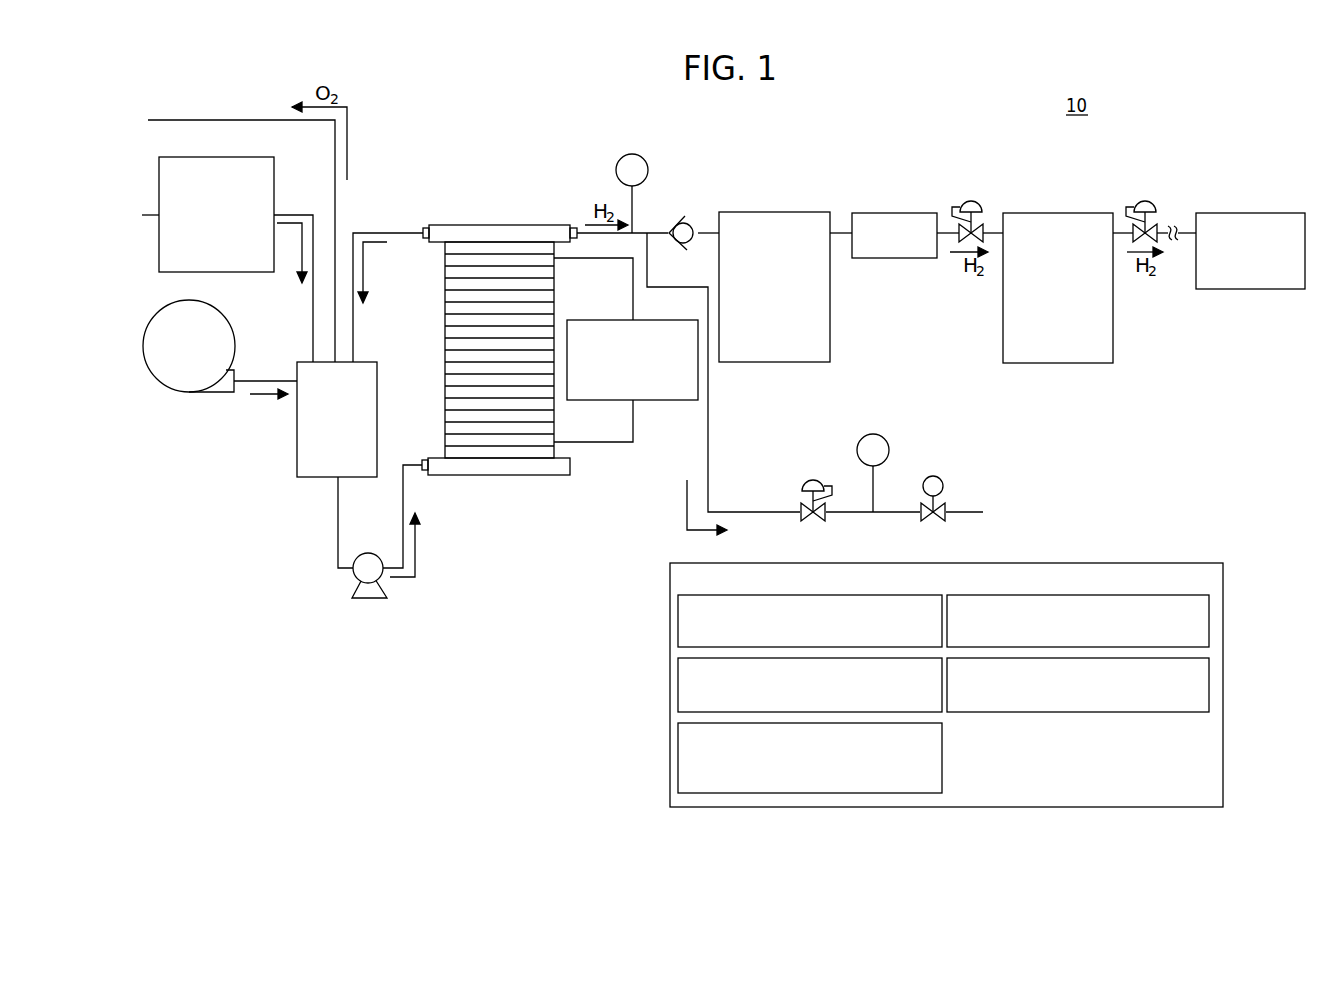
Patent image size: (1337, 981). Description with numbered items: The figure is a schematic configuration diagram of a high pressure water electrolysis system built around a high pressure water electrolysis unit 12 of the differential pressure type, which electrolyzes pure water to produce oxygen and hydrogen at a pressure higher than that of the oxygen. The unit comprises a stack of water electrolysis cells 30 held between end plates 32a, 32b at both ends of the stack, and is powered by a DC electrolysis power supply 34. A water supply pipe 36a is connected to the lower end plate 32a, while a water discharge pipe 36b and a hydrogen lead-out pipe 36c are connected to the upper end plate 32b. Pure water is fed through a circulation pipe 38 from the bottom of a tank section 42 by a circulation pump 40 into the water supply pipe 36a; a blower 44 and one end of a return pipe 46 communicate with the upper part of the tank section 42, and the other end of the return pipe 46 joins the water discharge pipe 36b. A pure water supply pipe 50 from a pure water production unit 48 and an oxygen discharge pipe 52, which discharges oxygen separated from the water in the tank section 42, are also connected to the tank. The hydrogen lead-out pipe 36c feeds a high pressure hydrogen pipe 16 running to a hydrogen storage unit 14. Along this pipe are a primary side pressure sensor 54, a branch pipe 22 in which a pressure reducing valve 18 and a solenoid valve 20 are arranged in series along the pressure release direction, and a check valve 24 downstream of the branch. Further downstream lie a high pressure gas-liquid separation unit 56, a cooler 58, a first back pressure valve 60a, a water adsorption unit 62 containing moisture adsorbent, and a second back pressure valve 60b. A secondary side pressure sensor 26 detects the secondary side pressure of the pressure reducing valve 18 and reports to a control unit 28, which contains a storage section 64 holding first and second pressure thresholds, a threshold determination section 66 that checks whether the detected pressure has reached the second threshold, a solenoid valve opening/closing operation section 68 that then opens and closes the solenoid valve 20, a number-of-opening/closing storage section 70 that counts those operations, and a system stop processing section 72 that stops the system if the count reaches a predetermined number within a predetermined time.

The high pressure water electrolysis unit 12 is at (463, 168).
The hydrogen storage unit 14 is at (1273, 213).
The high pressure hydrogen pipe 16 is at (845, 232).
The pressure reducing valve 18 is at (820, 480).
The solenoid valve 20 is at (936, 476).
The branch pipe 22 is at (710, 410).
The check valve 24 is at (685, 217).
The secondary side pressure sensor 26 is at (882, 434).
The control unit 28 is at (1175, 563).
The stack of water electrolysis cells 30 is at (447, 316).
The end plate 32a is at (500, 478).
The end plate 32b is at (495, 225).
The electrolysis power supply 34 is at (594, 320).
The water supply pipe 36a is at (422, 459).
The water discharge pipe 36b is at (425, 227).
The hydrogen lead-out pipe 36c is at (573, 227).
The circulation pipe 38 is at (403, 520).
The circulation pump 40 is at (370, 600).
The tank section 42 is at (297, 468).
The blower 44 is at (188, 393).
The return pipe 46 is at (378, 233).
The pure water production unit 48 is at (238, 157).
The pure water supply pipe 50 is at (305, 215).
The oxygen discharge pipe 52 is at (148, 121).
The primary side pressure sensor 54 is at (632, 154).
The high pressure gas-liquid separation unit 56 is at (768, 212).
The cooler 58 is at (900, 212).
The first back pressure valve 60a is at (972, 201).
The second back pressure valve 60b is at (1147, 201).
The water adsorption unit 62 is at (1055, 213).
The storage section 64 is at (677, 622).
The threshold determination section 66 is at (677, 682).
The solenoid valve opening/closing operation section 68 is at (677, 752).
The number-of-opening/closing storage section 70 is at (1209, 622).
The system stop processing section 72 is at (1209, 682).